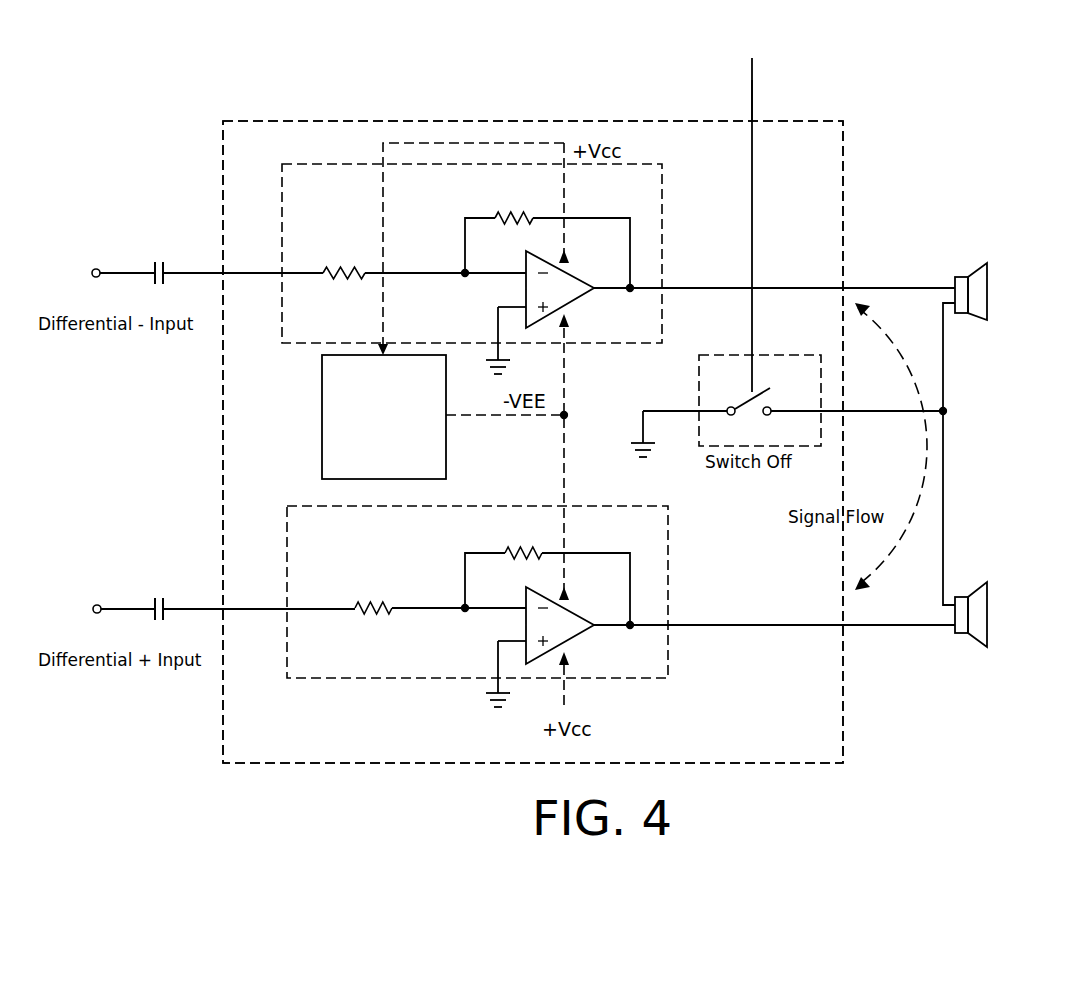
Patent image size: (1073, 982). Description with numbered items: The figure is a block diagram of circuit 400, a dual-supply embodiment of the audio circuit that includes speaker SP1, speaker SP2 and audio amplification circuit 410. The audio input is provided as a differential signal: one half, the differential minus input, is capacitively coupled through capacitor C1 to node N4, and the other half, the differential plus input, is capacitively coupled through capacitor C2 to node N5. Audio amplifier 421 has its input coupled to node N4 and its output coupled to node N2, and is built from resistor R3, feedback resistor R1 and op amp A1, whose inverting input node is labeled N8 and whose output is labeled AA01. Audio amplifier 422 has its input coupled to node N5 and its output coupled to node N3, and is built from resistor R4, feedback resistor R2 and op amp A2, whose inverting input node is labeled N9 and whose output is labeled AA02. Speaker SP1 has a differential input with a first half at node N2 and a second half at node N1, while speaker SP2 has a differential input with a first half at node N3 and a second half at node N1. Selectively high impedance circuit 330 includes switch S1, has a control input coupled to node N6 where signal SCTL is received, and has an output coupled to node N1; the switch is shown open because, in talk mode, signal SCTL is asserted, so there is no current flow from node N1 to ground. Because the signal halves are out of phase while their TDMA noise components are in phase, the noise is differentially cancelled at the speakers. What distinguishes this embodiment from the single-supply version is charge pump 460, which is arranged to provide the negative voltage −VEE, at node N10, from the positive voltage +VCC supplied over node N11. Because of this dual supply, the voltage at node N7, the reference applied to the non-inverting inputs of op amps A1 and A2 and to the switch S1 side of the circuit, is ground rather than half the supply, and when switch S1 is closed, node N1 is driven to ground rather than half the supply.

The circuit 400 is at (562, 85).
The audio amplification circuit 410 is at (818, 752).
The audio amplifier 421 is at (652, 195).
The audio amplifier 422 is at (656, 536).
The charge pump 460 is at (401, 453).
The selectively high impedance circuit 330 is at (795, 380).
The node N1 is at (946, 410).
The node N2 is at (895, 288).
The node N3 is at (931, 625).
The node N4 is at (214, 273).
The node N5 is at (214, 609).
The node N6 is at (751, 90).
The node N7 is at (497, 306).
The first amplifier inverting input node N8 is at (463, 271).
The second amplifier inverting input node N9 is at (463, 606).
The negative supply node N10 is at (566, 414).
The charge pump supply node N11 is at (383, 214).
The resistor R1 is at (547, 237).
The resistor R2 is at (547, 573).
The resistor R3 is at (344, 259).
The resistor R4 is at (373, 594).
The capacitor C1 is at (157, 285).
The capacitor C2 is at (157, 621).
The op amp A1 is at (574, 289).
The op amp A2 is at (574, 625).
The switch S1 is at (793, 397).
The speaker SP1 is at (971, 280).
The speaker SP2 is at (971, 604).
The first amplifier output AA01 is at (774, 278).
The second amplifier output AA02 is at (774, 615).
The signal SCTL is at (746, 213).